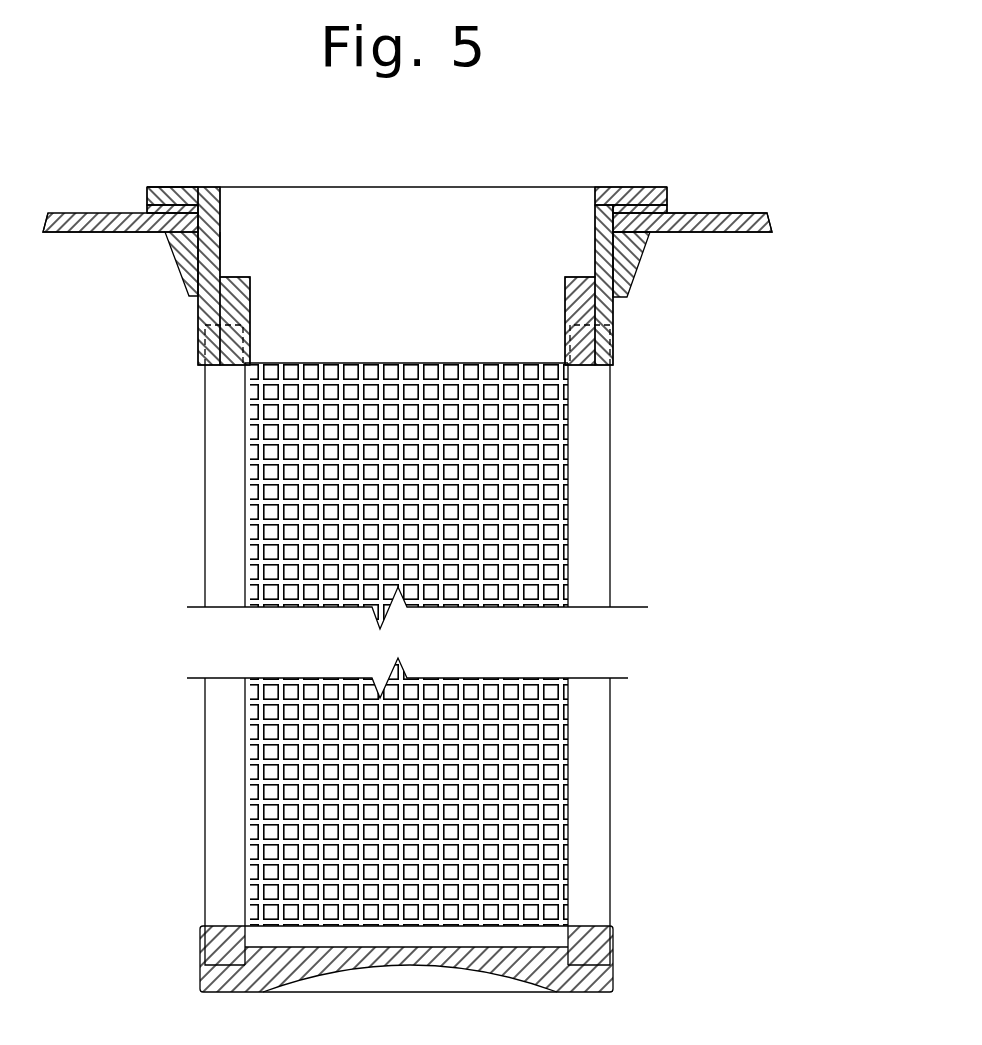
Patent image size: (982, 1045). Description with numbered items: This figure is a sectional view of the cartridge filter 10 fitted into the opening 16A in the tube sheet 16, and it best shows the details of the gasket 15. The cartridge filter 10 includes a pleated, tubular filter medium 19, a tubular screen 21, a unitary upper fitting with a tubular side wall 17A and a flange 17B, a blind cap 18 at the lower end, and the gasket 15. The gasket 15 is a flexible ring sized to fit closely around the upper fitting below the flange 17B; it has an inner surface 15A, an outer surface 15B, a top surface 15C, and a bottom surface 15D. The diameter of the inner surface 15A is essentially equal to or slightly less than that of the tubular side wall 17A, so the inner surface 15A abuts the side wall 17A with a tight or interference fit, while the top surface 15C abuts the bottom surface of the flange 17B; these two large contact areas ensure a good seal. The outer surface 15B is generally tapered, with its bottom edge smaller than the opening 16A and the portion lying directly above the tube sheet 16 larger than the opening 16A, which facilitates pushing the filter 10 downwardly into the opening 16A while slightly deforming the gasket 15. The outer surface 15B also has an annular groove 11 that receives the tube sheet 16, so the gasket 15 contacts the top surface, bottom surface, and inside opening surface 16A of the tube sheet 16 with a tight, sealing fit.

The cartridge filter 10 is at (627, 145).
The annular groove 11 is at (650, 225).
The gasket 15 is at (643, 260).
The inner surface 15A is at (220, 218).
The outer surface 15B is at (175, 267).
The top surface 15C is at (172, 205).
The bottom surface 15D is at (197, 297).
The tube sheet 16 is at (743, 215).
The opening 16A is at (212, 247).
The tubular side wall 17A is at (613, 313).
The flange 17B is at (670, 197).
The blind cap 18 is at (205, 972).
The tubular filter medium 19 is at (207, 560).
The tubular screen 21 is at (250, 483).